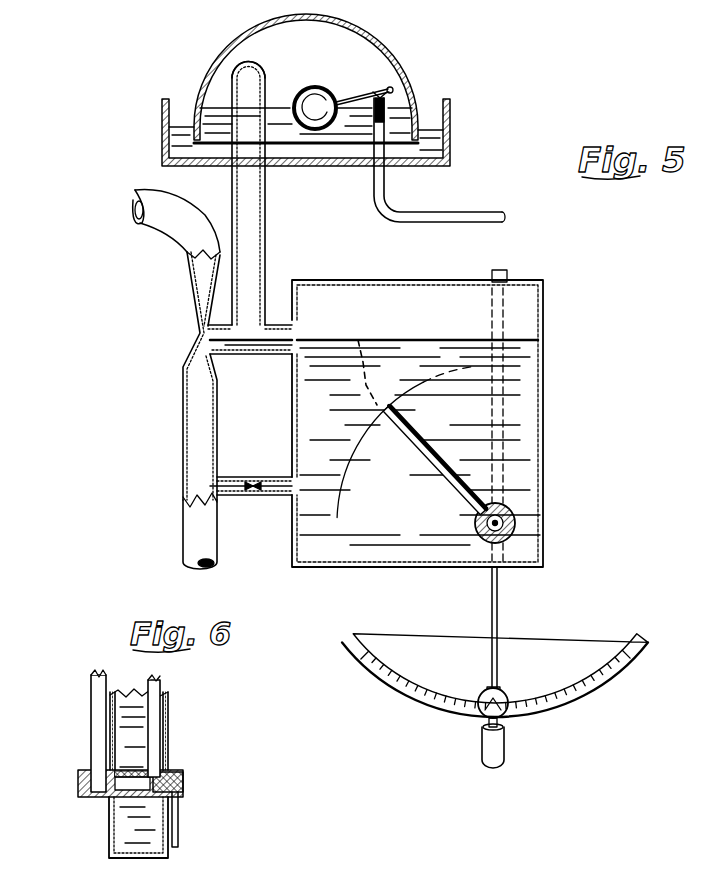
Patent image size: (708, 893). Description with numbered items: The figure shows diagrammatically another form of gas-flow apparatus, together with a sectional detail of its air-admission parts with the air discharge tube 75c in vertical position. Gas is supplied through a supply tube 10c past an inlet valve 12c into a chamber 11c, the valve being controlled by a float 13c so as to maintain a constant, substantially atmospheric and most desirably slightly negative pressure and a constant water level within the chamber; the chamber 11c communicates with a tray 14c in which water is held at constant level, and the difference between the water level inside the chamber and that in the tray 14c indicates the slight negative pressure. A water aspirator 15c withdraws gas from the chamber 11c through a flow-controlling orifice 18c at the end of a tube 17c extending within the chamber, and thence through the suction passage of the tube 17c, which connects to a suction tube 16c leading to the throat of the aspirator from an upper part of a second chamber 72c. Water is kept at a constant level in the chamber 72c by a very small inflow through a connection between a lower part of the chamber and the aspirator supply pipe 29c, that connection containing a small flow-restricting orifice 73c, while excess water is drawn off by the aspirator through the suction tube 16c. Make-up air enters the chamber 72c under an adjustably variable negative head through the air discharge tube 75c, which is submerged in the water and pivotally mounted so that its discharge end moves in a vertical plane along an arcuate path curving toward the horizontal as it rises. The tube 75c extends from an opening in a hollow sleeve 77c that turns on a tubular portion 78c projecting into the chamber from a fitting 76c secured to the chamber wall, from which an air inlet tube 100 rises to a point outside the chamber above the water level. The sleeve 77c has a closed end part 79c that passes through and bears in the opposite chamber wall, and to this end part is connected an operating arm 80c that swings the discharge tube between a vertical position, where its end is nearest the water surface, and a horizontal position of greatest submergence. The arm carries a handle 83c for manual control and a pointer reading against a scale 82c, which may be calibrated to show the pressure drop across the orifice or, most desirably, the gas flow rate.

In FIG. 5, the supply tube 10c is at (428, 215).
In FIG. 5, the chamber 11c is at (365, 48).
In FIG. 5, the inlet valve 12c is at (392, 88).
In FIG. 5, the float 13c is at (317, 97).
In FIG. 5, the tray 14c is at (452, 124).
In FIG. 5, the water aspirator 15c is at (200, 333).
In FIG. 5, the suction tube 16c is at (259, 353).
In FIG. 5, the tube 17c is at (267, 210).
In FIG. 5, the flow-controlling orifice 18c is at (248, 62).
In FIG. 5, the aspirator supply pipe 29c is at (185, 538).
In FIG. 5, the chamber 72c is at (378, 288).
In FIG. 5, the flow-restricting orifice 73c is at (252, 496).
In FIG. 5, the air discharge tube 75c is at (404, 431).
In FIG. 6, the fitting 76c is at (80, 783).
In FIG. 6, the hollow sleeve 77c is at (140, 800).
In FIG. 6, the tubular portion 78c is at (120, 800).
In FIG. 6, the closed end part 79c is at (185, 784).
In FIG. 5, the operating arm 80c is at (499, 626).
In FIG. 6, the operating arm 80c is at (180, 828).
In FIG. 5, the scale 82c is at (433, 688).
In FIG. 5, the handle 83c is at (504, 750).
In FIG. 5, the air inlet tube 100 is at (507, 275).
In FIG. 6, the air inlet tube 100 is at (90, 699).